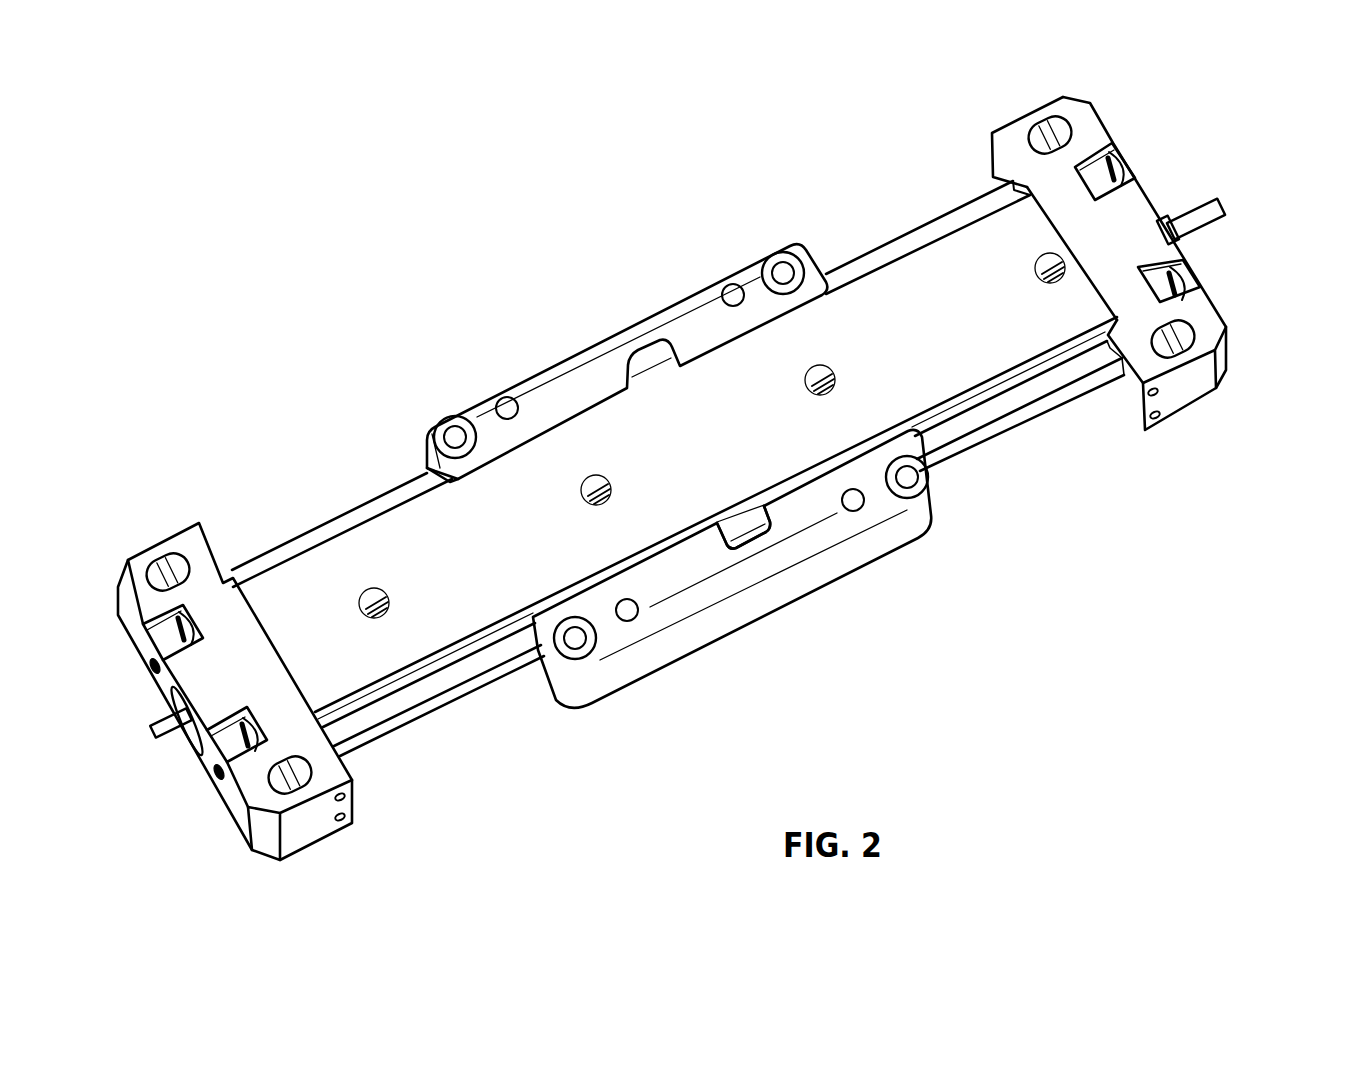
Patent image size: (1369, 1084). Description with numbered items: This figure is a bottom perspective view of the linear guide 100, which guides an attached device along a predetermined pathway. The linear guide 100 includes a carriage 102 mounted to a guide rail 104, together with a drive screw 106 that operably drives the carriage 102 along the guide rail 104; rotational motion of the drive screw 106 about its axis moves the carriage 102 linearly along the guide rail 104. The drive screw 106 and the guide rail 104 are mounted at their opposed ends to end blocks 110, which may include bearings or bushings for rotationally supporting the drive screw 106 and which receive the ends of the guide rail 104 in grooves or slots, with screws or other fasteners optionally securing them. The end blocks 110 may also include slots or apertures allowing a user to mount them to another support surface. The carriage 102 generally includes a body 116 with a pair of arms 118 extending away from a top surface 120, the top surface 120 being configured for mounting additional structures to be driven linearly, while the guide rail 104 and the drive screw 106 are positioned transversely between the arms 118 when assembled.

The linear guide 100 is at (197, 125).
The carriage 102 is at (932, 593).
The guide rail 104 is at (373, 535).
The drive screw 106 is at (175, 738).
The end blocks 110 is at (1242, 420).
The body 116 is at (595, 687).
The arms 118 is at (418, 444).
The top surface 120 is at (683, 653).